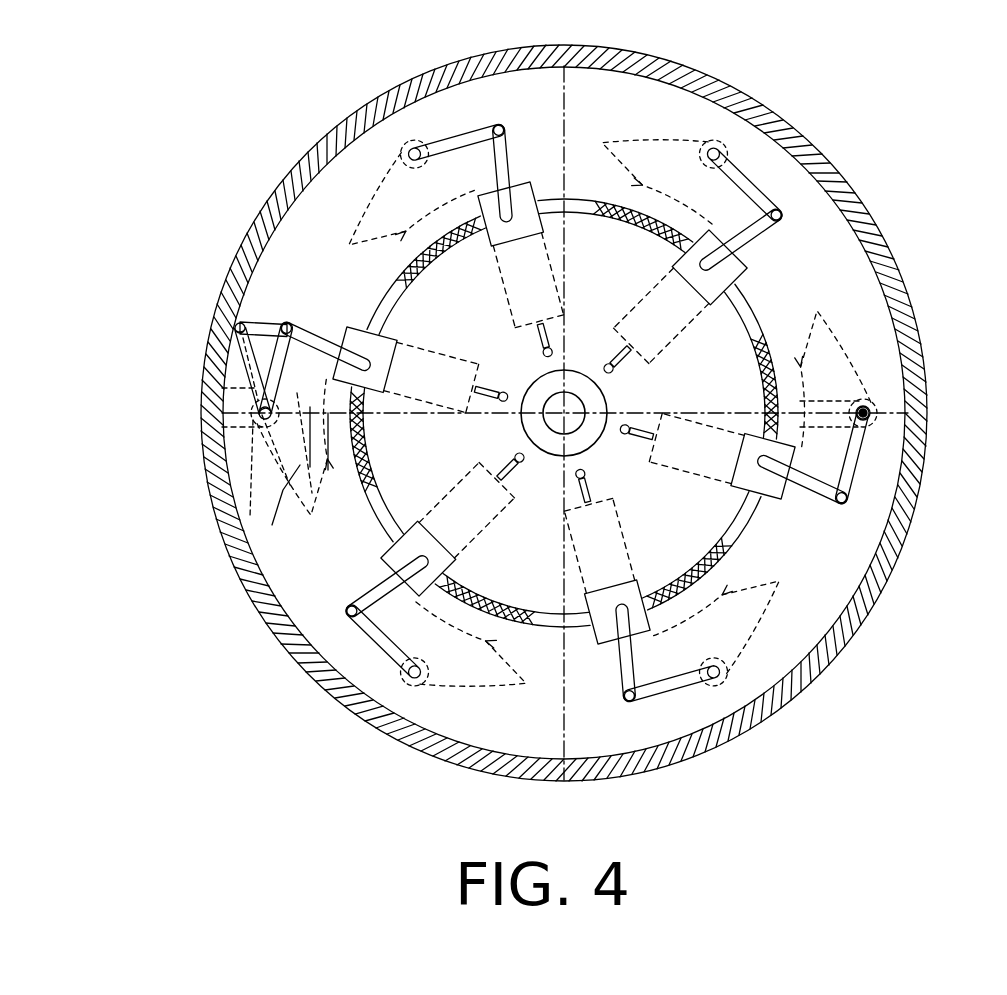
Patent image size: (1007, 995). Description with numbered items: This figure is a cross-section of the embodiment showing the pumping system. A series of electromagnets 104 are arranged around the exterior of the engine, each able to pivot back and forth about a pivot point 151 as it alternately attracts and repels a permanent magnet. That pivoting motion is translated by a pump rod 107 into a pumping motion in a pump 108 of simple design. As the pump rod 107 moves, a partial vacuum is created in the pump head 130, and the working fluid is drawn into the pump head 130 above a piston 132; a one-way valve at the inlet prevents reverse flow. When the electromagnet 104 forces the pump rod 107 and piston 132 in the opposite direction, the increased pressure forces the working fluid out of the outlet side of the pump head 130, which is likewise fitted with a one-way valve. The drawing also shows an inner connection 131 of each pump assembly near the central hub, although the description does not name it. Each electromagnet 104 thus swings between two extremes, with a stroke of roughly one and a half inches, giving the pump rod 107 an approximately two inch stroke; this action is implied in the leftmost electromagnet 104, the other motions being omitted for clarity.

The electromagnet 104 is at (375, 183).
The pump rod 107 is at (467, 127).
The pump 108 is at (519, 178).
The pump head 130 is at (578, 527).
The pin 131 is at (572, 325).
The piston 132 is at (537, 222).
The pivot point 151 is at (866, 413).